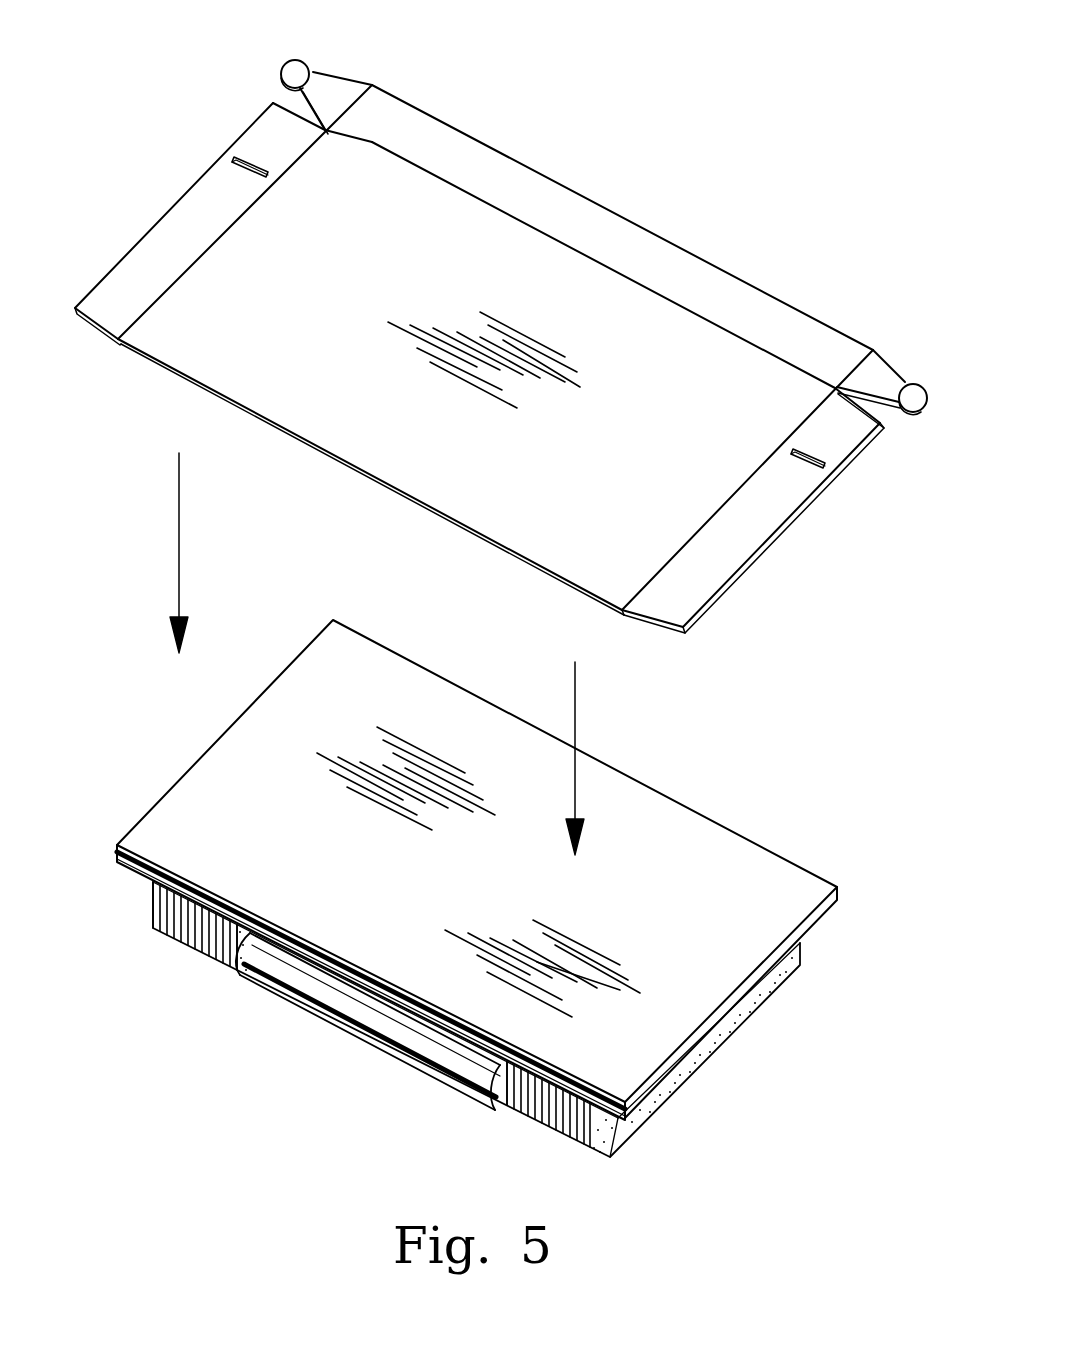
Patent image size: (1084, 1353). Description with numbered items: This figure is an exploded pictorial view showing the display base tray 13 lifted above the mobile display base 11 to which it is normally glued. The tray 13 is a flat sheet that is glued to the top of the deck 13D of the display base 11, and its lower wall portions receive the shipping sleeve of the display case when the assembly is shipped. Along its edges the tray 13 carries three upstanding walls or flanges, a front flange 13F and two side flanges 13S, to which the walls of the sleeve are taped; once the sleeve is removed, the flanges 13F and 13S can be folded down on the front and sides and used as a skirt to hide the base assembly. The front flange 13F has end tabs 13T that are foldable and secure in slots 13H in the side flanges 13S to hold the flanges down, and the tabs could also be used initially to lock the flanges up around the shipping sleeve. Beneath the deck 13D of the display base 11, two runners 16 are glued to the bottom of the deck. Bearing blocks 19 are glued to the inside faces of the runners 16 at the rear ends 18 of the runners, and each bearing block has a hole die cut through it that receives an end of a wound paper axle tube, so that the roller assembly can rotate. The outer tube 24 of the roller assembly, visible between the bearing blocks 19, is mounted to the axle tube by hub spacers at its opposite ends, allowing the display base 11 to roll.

The mobile display base 11 is at (470, 912).
The display base tray 13 is at (507, 326).
The deck 13D is at (750, 868).
The front flange 13F is at (593, 223).
The side flange 13S is at (198, 213).
The end tab 13T is at (333, 88).
The side flange slot 13H is at (245, 160).
The runner 16 is at (153, 896).
The rear end of runner 18 is at (170, 933).
The bearing block 19 is at (207, 953).
The outer tube 24 is at (390, 1020).